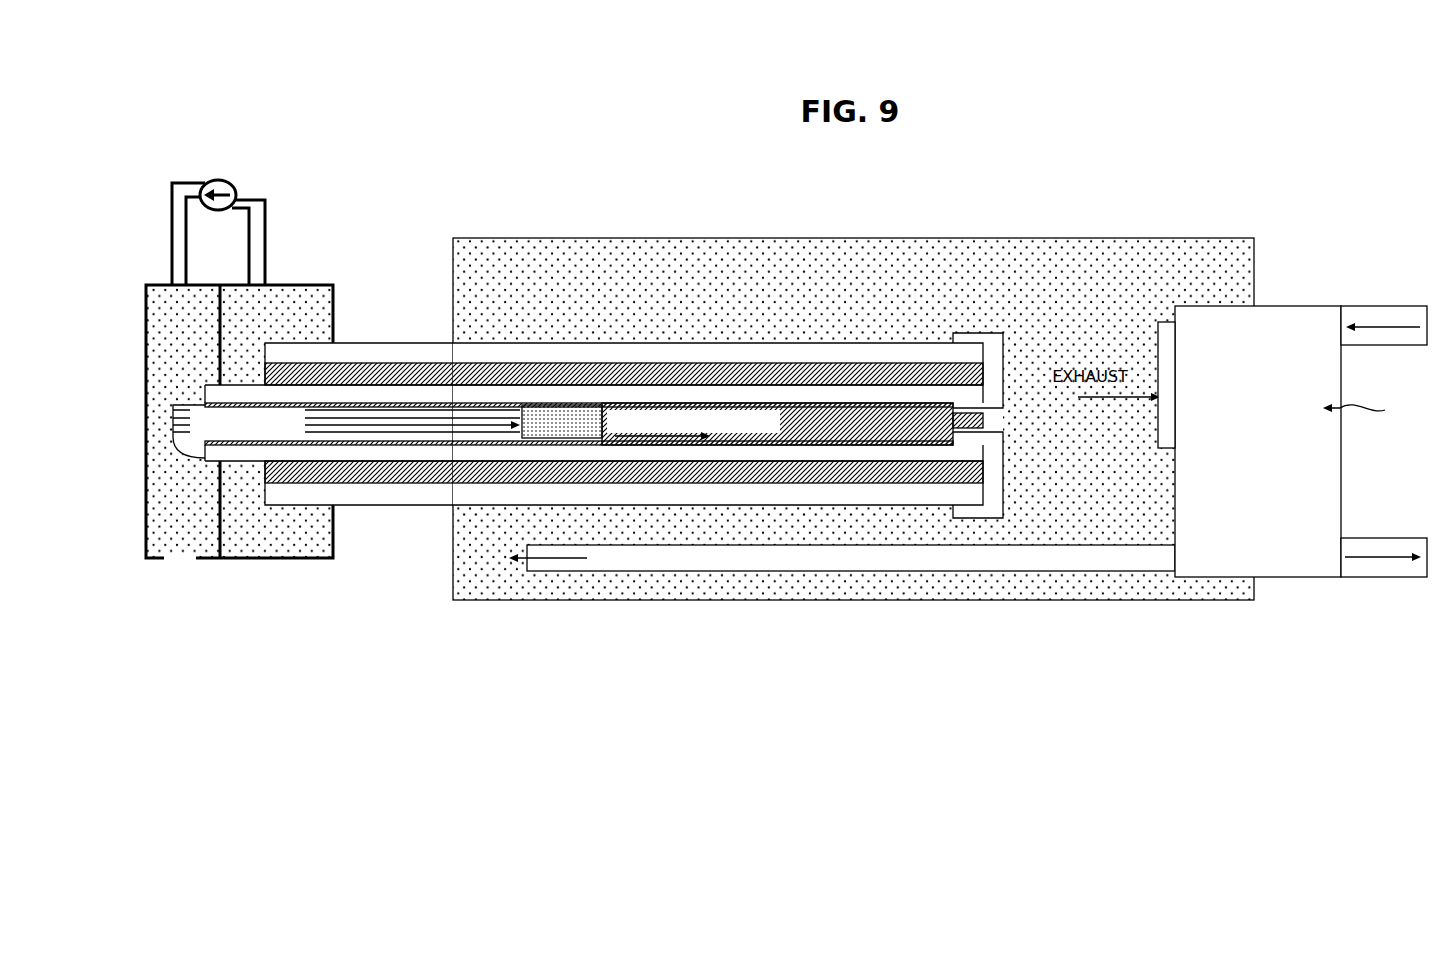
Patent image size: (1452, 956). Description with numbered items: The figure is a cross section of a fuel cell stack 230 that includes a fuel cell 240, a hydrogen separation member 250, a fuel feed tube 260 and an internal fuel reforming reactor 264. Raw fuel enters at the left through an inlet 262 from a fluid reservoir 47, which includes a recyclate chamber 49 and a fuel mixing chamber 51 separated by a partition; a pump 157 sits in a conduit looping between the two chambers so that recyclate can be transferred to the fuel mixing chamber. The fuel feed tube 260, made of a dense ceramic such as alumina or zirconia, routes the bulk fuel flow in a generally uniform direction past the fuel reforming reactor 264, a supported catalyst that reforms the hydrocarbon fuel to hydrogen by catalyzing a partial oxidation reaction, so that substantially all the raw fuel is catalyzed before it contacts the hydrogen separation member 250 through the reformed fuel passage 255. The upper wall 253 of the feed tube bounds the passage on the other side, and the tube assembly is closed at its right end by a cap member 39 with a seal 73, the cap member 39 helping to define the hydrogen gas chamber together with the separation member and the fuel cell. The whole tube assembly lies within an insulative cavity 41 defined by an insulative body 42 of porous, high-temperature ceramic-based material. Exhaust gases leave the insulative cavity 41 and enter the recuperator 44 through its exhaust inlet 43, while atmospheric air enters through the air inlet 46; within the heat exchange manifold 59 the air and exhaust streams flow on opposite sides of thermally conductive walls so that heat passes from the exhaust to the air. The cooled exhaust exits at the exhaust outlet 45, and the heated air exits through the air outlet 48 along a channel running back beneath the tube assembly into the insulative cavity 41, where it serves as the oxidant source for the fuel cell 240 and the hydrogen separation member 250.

The fuel cell stack 230 is at (346, 182).
The pump 157 is at (240, 184).
The fluid reservoir 47 is at (153, 283).
The fuel mixing chamber 51 is at (163, 531).
The recyclate chamber 49 is at (251, 523).
The raw fuel inlet 262 is at (186, 407).
The fuel feed tube 260 is at (394, 471).
The upper heater wall 253 is at (543, 370).
The fuel reforming reactor 264 is at (583, 417).
The fuel cell 240 is at (670, 347).
The hydrogen separation member 250 is at (808, 389).
The reformed fuel passage 255 is at (832, 440).
The cap member 39 is at (1004, 338).
The seal 73 is at (985, 420).
The insulative cavity 41 is at (942, 272).
The air outlet 48 is at (570, 560).
The insulative body 42 is at (1257, 233).
The exhaust inlet 43 is at (1165, 355).
The air inlet 46 is at (1400, 322).
The recuperator 44 is at (1366, 407).
The heat exchange manifold 59 is at (1333, 455).
The exhaust outlet 45 is at (1390, 573).